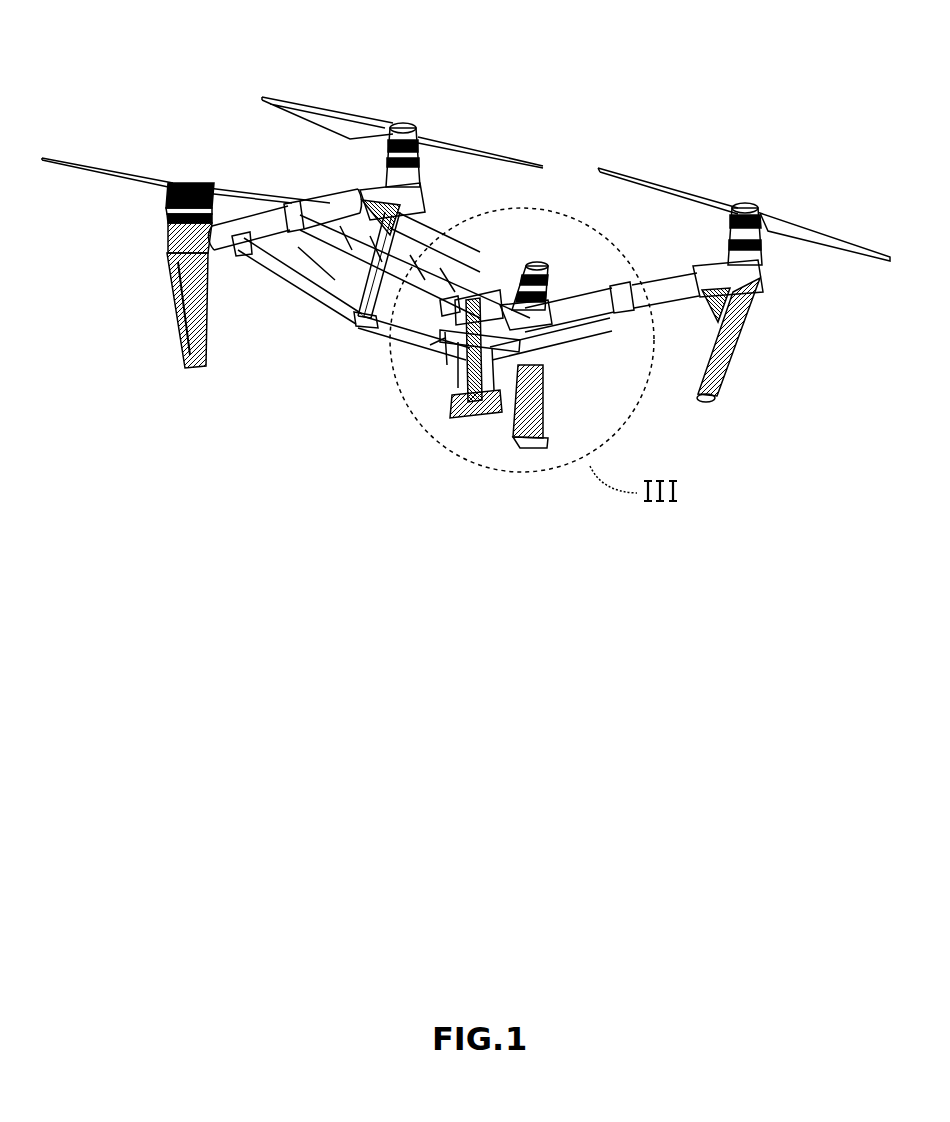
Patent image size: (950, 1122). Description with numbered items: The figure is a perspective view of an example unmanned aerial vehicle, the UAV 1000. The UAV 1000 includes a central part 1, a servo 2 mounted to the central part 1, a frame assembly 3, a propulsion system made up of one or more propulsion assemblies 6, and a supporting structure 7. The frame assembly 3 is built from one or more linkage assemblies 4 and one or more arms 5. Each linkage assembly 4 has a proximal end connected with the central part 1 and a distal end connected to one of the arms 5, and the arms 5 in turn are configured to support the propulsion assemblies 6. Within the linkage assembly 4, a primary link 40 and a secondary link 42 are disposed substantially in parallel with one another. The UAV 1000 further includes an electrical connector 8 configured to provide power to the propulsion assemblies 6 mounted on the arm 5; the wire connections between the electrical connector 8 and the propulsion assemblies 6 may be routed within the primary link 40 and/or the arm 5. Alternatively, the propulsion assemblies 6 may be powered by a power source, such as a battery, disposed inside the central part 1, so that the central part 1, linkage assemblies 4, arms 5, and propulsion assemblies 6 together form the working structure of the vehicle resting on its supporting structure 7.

The UAV 1000 is at (248, 46).
The central part 1 is at (547, 367).
The servo 2 is at (462, 275).
The frame assembly 3 is at (336, 421).
The linkage assembly 4 is at (290, 372).
The arm 5 is at (236, 237).
The propulsion assembly 6 is at (350, 126).
The supporting structure 7 is at (745, 328).
The electrical connector 8 is at (460, 395).
The primary link 40 is at (347, 262).
The secondary link 42 is at (392, 338).